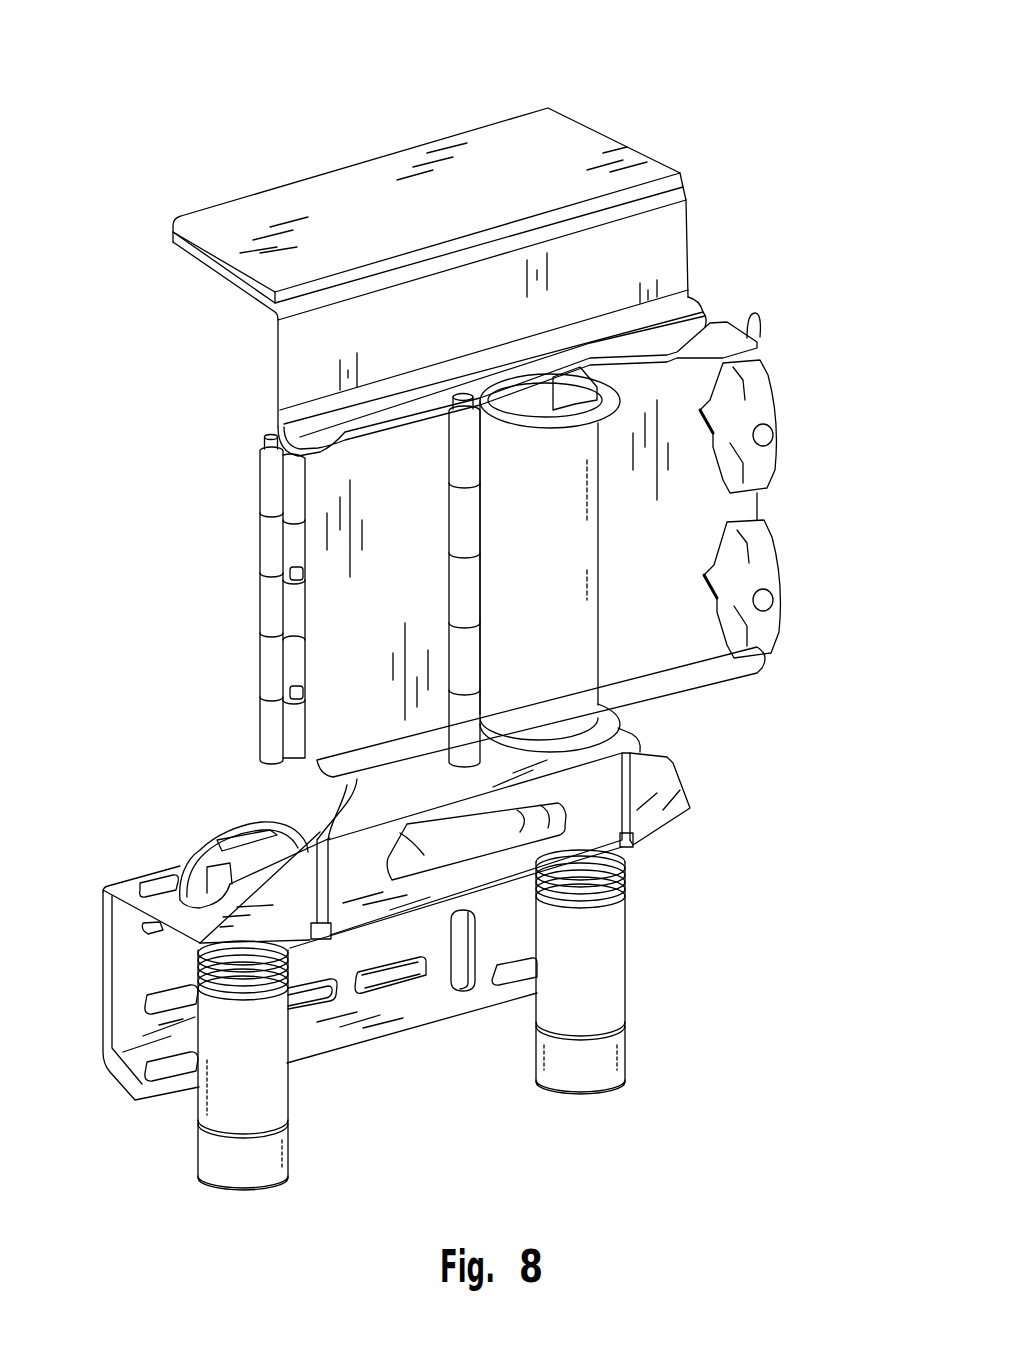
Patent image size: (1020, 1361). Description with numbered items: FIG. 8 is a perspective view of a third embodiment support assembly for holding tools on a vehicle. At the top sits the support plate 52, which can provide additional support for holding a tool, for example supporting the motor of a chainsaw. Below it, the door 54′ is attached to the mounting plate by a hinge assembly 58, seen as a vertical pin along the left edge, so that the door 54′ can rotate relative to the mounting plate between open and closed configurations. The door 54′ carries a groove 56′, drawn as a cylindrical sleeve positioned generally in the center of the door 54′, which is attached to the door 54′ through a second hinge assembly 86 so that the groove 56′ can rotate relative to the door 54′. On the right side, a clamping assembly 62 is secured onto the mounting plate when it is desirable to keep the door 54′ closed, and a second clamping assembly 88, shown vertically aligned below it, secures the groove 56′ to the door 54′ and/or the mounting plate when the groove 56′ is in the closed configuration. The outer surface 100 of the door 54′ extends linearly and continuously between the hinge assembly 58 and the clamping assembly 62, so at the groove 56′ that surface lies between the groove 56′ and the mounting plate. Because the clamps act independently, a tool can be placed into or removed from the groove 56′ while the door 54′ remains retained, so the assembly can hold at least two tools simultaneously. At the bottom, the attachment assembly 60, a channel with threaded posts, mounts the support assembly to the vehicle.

The support plate 52 is at (552, 147).
The outer surface 100 is at (412, 469).
The hinge assembly 58 is at (263, 438).
The second hinge assembly 86 is at (447, 580).
The groove 56′ is at (533, 519).
The door 54′ is at (680, 637).
The clamping assembly 62 is at (763, 400).
The second clamping assembly 88 is at (763, 562).
The attachment assembly 60 is at (83, 863).